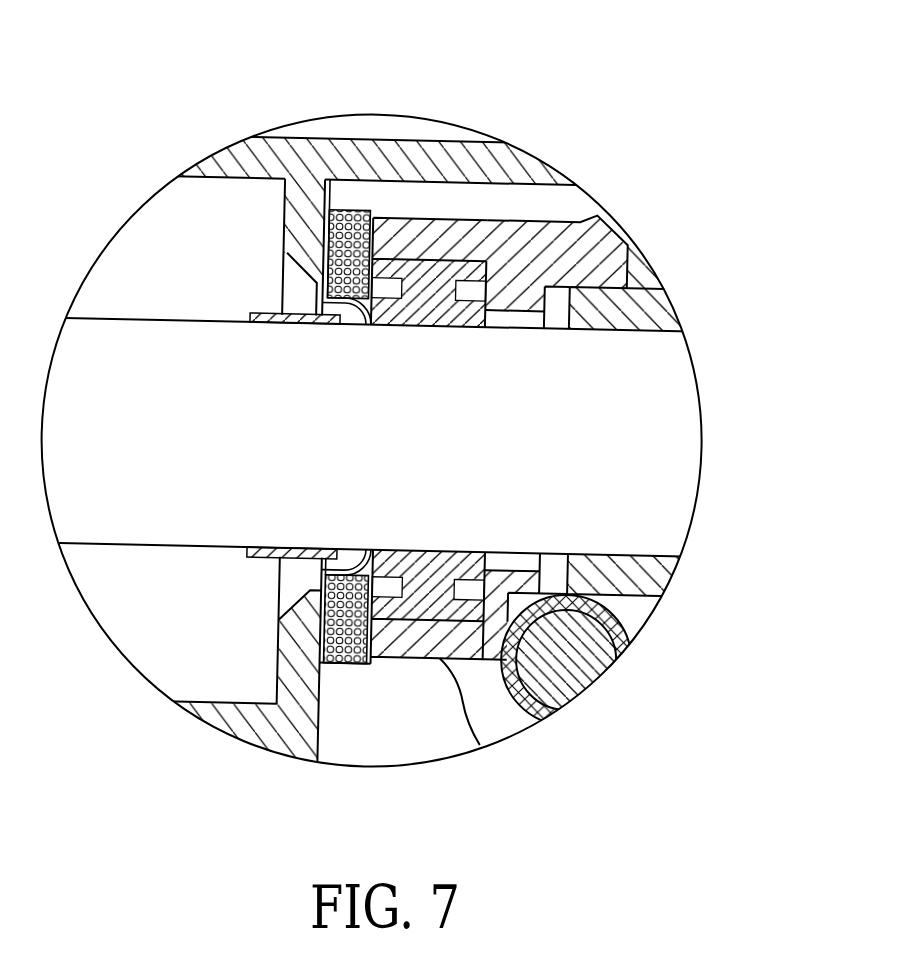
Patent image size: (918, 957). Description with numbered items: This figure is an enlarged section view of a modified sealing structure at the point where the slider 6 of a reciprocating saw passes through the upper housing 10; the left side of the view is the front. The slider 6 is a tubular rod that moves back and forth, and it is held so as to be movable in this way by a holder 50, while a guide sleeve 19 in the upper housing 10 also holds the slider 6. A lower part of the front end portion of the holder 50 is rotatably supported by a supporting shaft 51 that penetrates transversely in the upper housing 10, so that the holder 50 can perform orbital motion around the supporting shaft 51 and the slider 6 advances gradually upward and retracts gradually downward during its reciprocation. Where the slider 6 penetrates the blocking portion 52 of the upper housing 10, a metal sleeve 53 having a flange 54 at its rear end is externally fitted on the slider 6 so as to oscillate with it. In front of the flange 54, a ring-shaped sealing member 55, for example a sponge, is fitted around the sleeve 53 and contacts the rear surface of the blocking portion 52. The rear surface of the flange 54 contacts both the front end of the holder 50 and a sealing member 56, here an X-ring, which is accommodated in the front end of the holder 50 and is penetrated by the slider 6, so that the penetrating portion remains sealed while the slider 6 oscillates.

The slider 6 is at (689, 396).
The upper housing 10 is at (507, 158).
The guide sleeve 19 is at (653, 302).
The holder 50 is at (592, 239).
The supporting shaft 51 is at (586, 657).
The blocking portion 52 is at (295, 238).
The metal sleeve 53 is at (252, 306).
The flange 54 is at (363, 205).
The ring-shaped sealing member 55 is at (336, 201).
The sealing member 56 is at (429, 279).